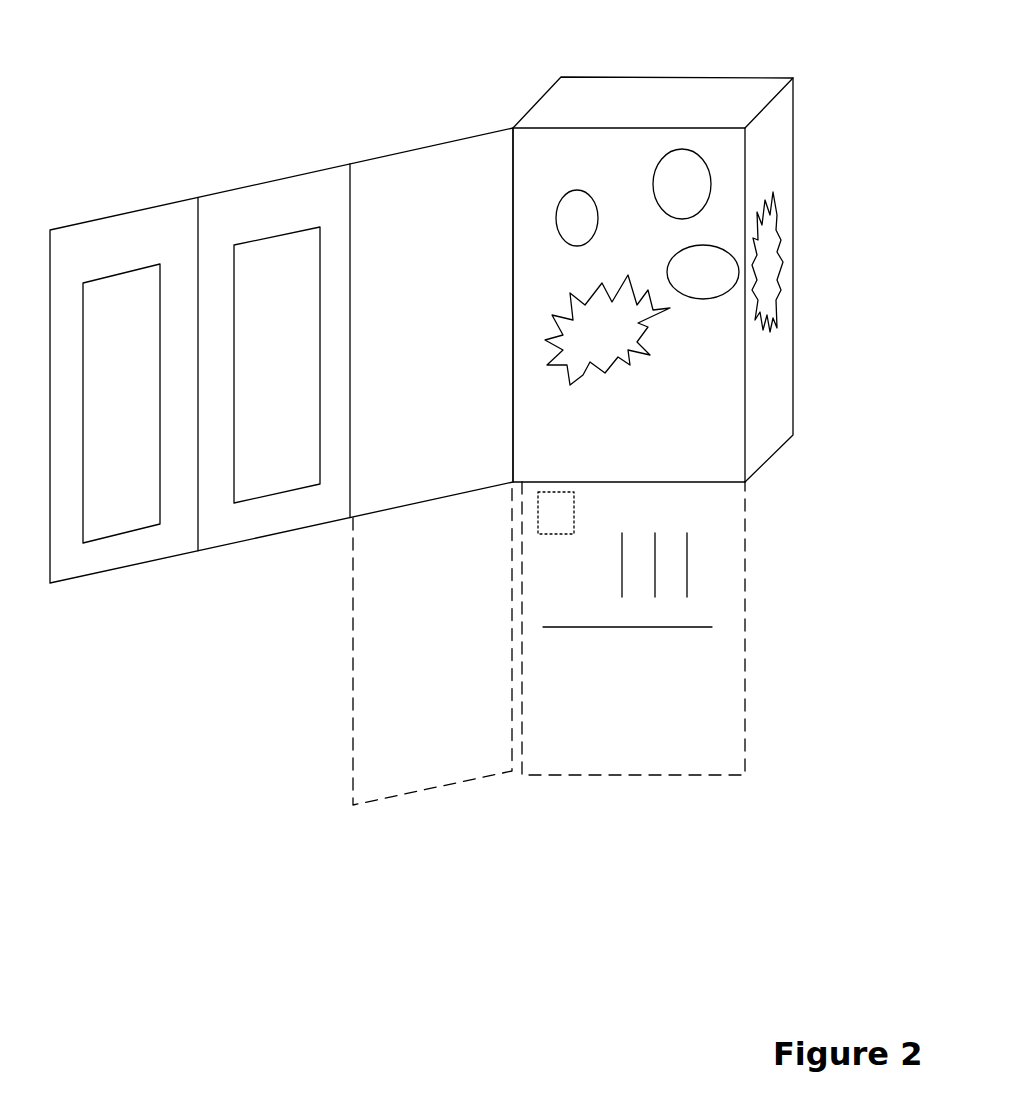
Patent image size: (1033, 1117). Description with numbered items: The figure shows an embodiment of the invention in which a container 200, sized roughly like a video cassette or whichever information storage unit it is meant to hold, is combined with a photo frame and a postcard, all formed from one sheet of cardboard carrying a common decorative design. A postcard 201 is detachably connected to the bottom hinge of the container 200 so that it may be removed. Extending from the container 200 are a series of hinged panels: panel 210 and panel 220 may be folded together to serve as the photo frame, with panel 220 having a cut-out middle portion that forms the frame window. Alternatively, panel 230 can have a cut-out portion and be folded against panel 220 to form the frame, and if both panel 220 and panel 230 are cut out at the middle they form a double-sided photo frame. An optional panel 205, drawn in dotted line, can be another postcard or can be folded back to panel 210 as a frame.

The container 200 is at (717, 463).
The postcard 201 is at (629, 745).
The panel 205 is at (400, 758).
The panel 210 is at (423, 147).
The panel 220 is at (255, 175).
The panel 230 is at (123, 555).